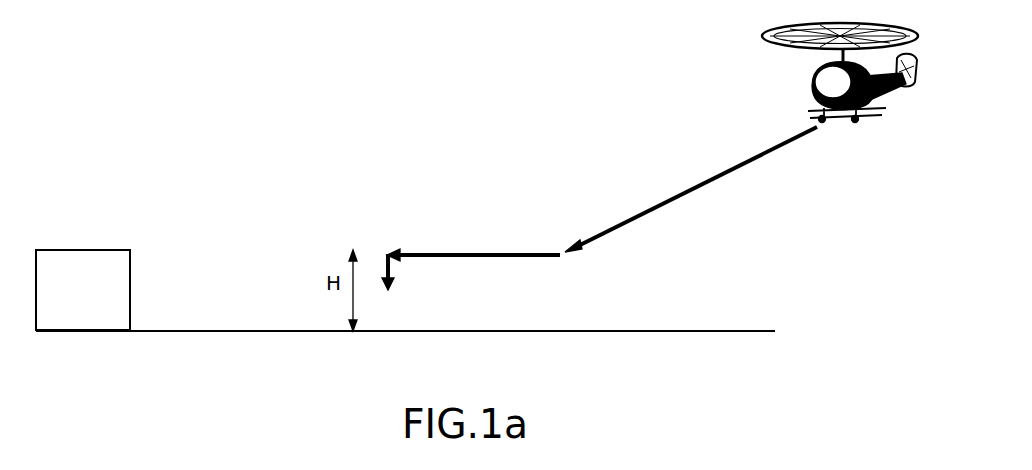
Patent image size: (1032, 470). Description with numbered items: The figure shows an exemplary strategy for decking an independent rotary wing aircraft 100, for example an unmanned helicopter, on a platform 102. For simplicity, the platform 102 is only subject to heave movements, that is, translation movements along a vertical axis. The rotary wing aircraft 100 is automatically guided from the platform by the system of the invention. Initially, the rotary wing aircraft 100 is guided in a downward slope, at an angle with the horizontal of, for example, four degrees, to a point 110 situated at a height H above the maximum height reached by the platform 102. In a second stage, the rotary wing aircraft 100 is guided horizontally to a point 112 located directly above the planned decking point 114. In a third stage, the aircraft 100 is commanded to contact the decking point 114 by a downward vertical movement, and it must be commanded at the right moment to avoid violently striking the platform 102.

The rotary wing aircraft 100 is at (843, 133).
The platform 102 is at (182, 331).
The point 110 is at (560, 245).
The point 112 is at (387, 250).
The decking point 114 is at (425, 331).